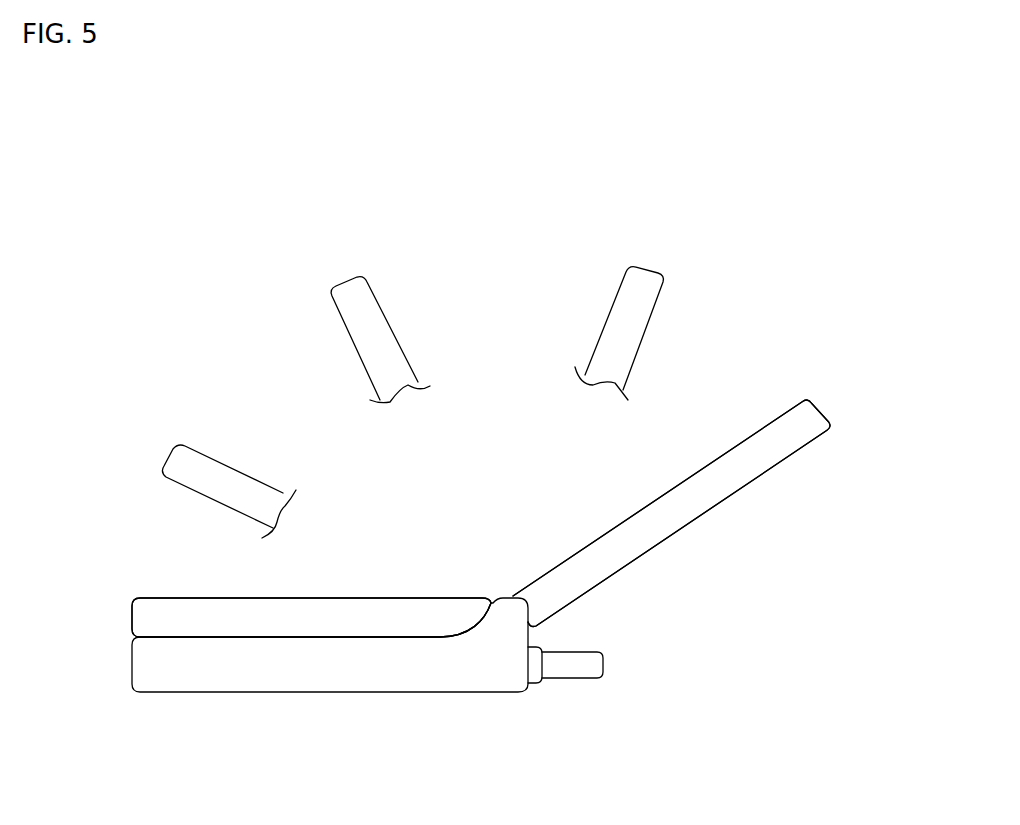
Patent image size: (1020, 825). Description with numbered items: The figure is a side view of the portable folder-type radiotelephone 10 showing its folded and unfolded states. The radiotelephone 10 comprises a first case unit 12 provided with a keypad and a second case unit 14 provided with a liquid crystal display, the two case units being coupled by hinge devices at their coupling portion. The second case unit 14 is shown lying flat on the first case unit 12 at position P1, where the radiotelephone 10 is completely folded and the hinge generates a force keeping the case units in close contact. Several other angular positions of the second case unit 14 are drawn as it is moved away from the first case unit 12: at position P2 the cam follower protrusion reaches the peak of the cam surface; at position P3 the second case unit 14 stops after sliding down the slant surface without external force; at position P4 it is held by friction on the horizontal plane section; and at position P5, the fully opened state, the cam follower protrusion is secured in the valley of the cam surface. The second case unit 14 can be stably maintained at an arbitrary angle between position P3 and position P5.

The portable folder-type radiotelephone 10 is at (481, 570).
The first case unit 12 is at (272, 678).
The second case unit 14 is at (368, 612).
The position P1 is at (110, 616).
The position P2 is at (150, 455).
The position P3 is at (338, 265).
The position P4 is at (654, 252).
The position P5 is at (838, 400).